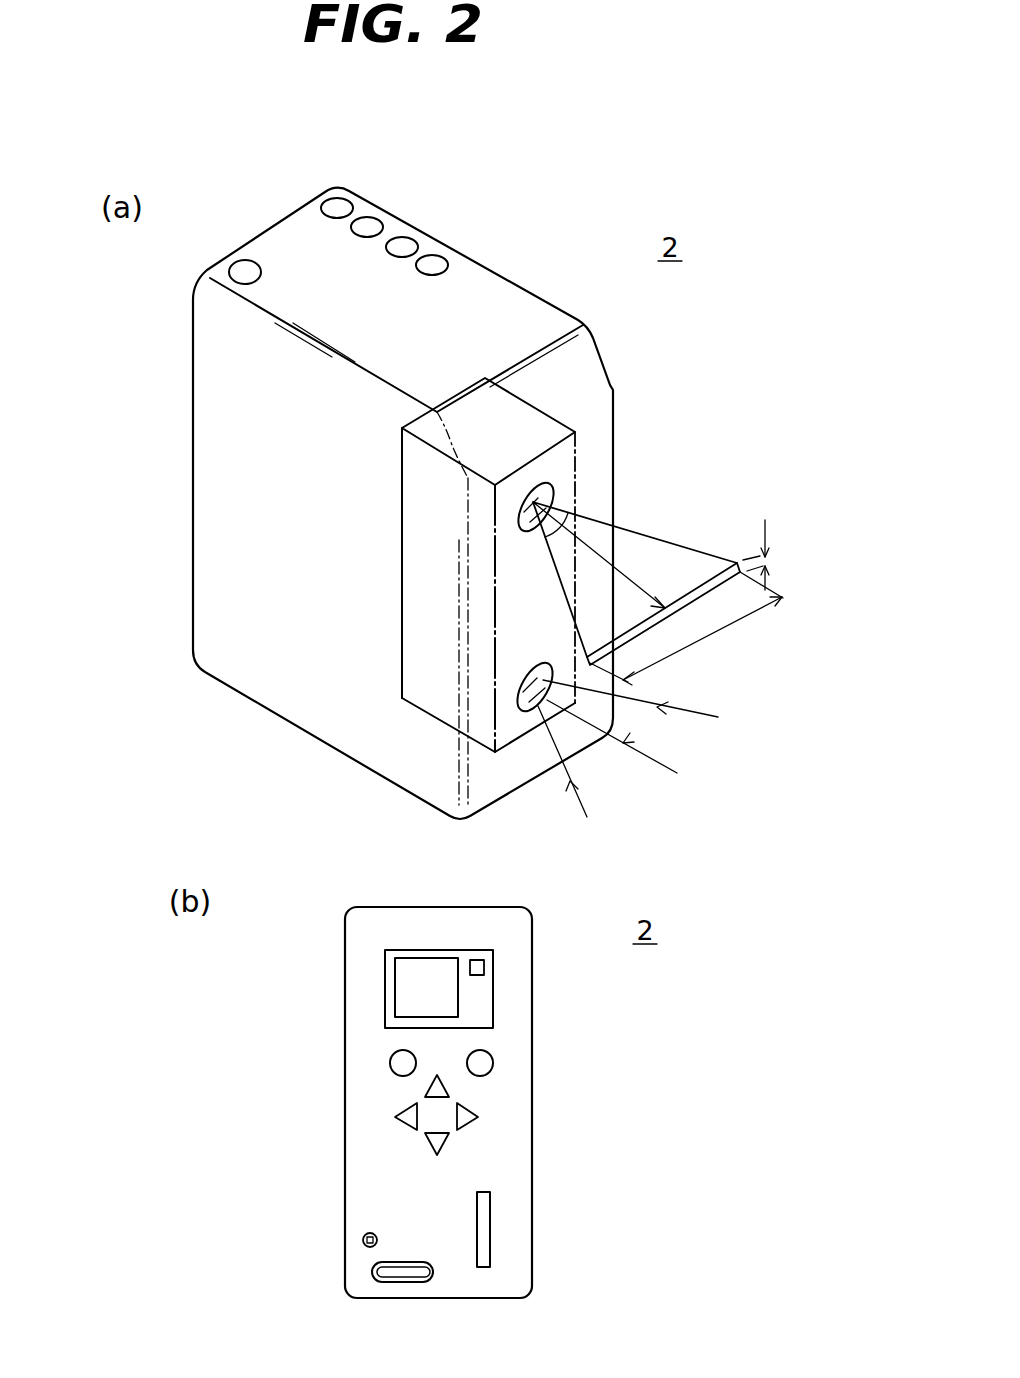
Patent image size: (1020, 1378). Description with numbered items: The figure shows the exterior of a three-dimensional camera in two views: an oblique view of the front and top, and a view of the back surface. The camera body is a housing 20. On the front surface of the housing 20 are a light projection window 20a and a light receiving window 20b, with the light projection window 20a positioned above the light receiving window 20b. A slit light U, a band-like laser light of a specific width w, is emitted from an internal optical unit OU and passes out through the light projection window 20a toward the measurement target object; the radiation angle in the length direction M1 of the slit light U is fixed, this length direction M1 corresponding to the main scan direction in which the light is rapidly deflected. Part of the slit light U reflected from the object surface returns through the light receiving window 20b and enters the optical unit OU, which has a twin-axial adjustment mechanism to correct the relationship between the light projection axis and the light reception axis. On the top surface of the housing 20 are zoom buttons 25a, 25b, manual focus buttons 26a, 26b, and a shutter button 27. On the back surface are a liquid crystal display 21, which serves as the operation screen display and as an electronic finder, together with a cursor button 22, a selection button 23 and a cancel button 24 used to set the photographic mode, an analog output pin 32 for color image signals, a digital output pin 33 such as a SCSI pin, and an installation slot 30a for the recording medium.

The housing 20 is at (606, 366).
The light projection window 20a is at (553, 488).
The light receiving window 20b is at (527, 710).
The liquid crystal display 21 is at (385, 992).
The cursor button 22 is at (481, 1108).
The selection button 23 is at (390, 1068).
The cancel button 24 is at (493, 1067).
The zoom button 25a is at (335, 198).
The zoom button 25b is at (372, 218).
The manual focus button 26a is at (412, 237).
The manual focus button 26b is at (436, 258).
The shutter button 27 is at (236, 260).
The installation slot 30a is at (490, 1220).
The analog output pin 32 is at (363, 1240).
The digital output pin 33 is at (372, 1268).
The optical unit OU is at (412, 703).
The slit light U is at (652, 552).
The width w is at (771, 555).
The length direction M1 is at (686, 628).